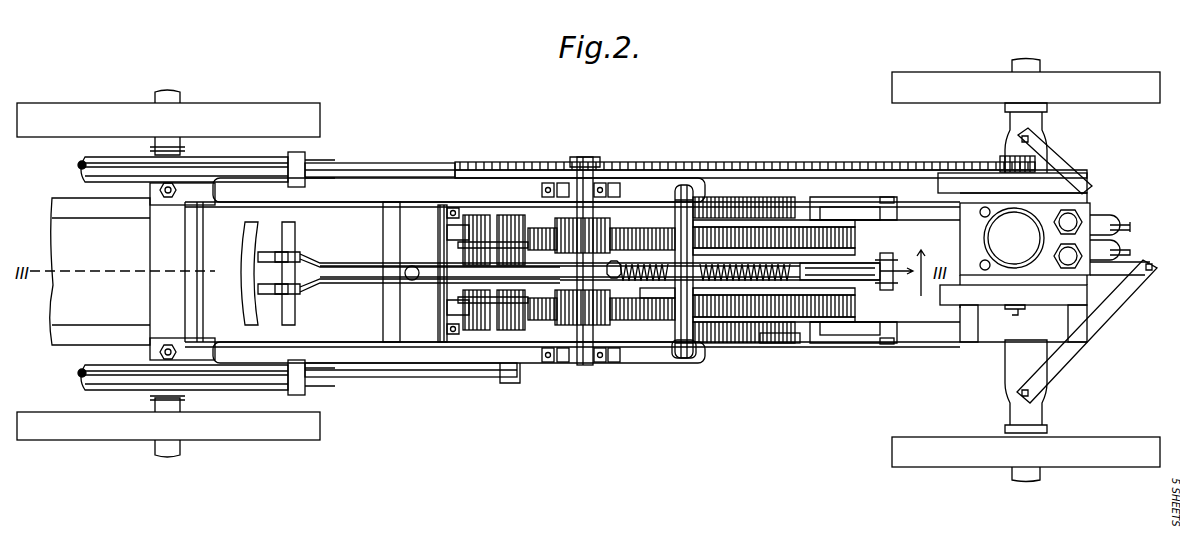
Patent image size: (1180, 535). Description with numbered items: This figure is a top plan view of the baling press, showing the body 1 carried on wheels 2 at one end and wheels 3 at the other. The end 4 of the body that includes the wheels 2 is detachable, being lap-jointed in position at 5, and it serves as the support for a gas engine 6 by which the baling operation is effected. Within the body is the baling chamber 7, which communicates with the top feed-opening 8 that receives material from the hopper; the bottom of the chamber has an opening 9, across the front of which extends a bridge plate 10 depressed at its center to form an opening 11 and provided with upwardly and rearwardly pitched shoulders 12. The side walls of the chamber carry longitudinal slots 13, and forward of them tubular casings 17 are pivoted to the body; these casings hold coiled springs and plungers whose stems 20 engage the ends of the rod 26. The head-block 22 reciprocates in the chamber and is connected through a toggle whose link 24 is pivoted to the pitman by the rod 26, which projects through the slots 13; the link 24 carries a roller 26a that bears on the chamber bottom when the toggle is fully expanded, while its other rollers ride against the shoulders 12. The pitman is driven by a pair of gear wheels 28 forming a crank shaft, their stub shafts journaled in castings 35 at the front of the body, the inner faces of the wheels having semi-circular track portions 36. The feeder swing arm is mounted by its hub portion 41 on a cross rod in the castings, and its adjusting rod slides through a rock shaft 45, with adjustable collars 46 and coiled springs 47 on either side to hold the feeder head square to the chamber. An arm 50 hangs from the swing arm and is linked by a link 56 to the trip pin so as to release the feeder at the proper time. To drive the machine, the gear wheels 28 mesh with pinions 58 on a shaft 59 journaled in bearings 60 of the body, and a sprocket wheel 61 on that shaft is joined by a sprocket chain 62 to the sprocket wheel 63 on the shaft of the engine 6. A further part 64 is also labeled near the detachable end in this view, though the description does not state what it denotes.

The body 1 is at (271, 188).
The carrying wheels 2 is at (941, 72).
The carrying wheels 3 is at (285, 103).
The detachable end 4 is at (935, 206).
The lap joint 5 is at (886, 198).
The gas engine 6 is at (1078, 234).
The baling chamber 7 is at (296, 241).
The top feed-opening 8 is at (295, 249).
The opening 9 is at (393, 220).
The bridge plate 10 is at (375, 259).
The opening 11 is at (346, 277).
The shoulders 12 is at (897, 269).
The longitudinal slots 13 is at (248, 272).
The tubular casings 17 is at (70, 165).
The stems 20 is at (335, 160).
The head-block 22 is at (440, 262).
The link 24 is at (507, 225).
The rod 26 is at (530, 330).
The roller 26a is at (465, 300).
The gear wheels 28 is at (760, 225).
The castings 35 is at (714, 227).
The semi-circular portions 36 is at (620, 265).
The hub portion 41 is at (692, 358).
The rock shaft 45 is at (667, 298).
The adjustable collars 46 is at (618, 215).
The expansive coiled springs 47 is at (705, 258).
The arm 50 is at (770, 343).
The link 56 is at (872, 207).
The gear pinions 58 is at (548, 362).
The shaft 59 is at (580, 362).
The bearings 60 is at (600, 362).
The sprocket wheel 61 is at (457, 164).
The sprocket chain 62 is at (762, 250).
The sprocket wheel 63 is at (1003, 160).
The bolt 64 is at (1014, 311).